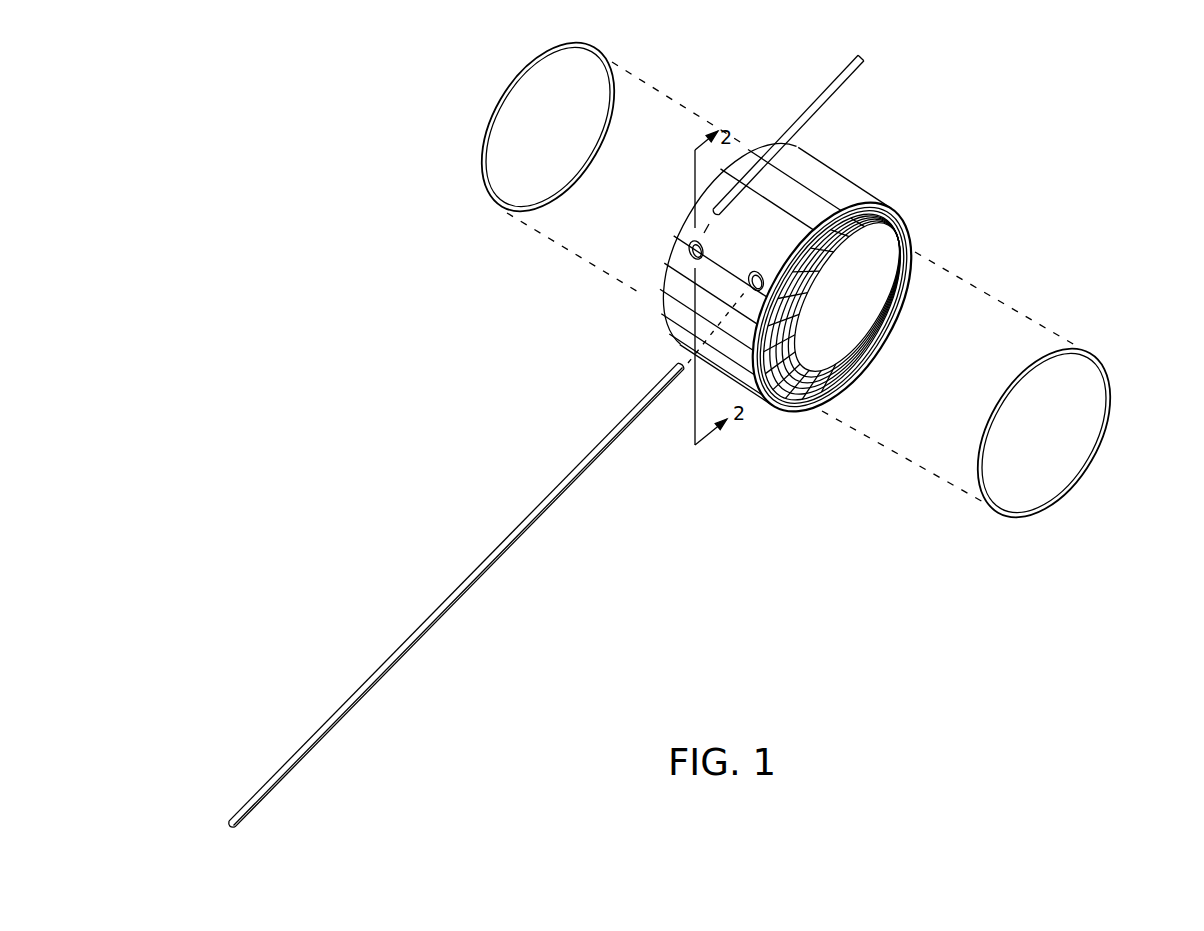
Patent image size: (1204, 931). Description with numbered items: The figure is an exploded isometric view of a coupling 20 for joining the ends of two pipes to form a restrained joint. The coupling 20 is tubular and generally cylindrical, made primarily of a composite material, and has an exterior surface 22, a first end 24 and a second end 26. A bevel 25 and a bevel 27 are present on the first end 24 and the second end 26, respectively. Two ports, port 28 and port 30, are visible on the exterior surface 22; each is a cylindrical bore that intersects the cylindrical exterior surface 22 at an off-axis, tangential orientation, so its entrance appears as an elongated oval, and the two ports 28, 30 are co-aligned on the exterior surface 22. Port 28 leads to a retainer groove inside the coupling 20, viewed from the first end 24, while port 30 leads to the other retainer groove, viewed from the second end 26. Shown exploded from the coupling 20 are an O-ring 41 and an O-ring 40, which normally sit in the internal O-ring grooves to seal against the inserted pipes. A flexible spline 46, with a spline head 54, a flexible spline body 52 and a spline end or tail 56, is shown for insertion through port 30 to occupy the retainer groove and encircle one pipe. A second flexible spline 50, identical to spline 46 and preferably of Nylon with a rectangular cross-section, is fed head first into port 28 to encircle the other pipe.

The coupling 20 is at (779, 292).
The exterior surface 22 is at (737, 394).
The first end 24 is at (714, 243).
The bevel 25 is at (689, 314).
The second end 26 is at (832, 307).
The bevel 27 is at (837, 306).
The port 28 is at (657, 235).
The port 30 is at (737, 271).
The O-ring 40 is at (1065, 433).
The O-ring 41 is at (541, 127).
The flexible spline 46 is at (431, 581).
The flexible spline 50 is at (852, 83).
The flexible spline body 52 is at (459, 597).
The spline head 54 is at (655, 352).
The spline end or tail 56 is at (207, 813).